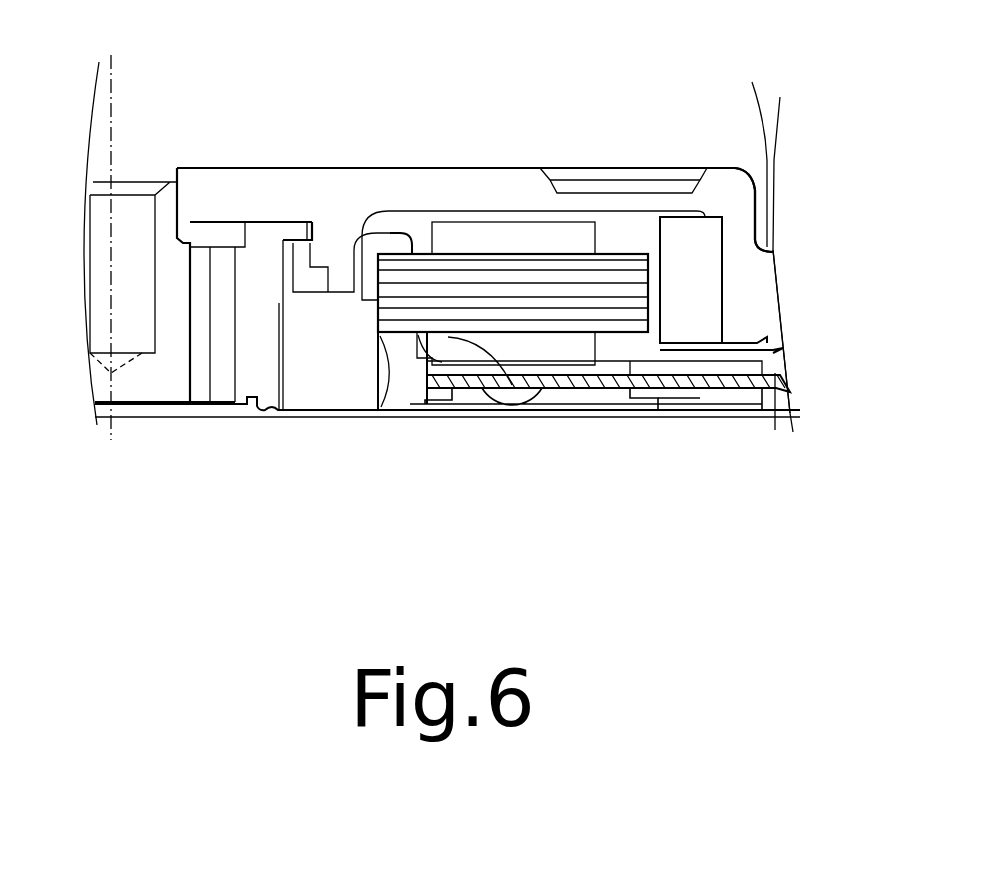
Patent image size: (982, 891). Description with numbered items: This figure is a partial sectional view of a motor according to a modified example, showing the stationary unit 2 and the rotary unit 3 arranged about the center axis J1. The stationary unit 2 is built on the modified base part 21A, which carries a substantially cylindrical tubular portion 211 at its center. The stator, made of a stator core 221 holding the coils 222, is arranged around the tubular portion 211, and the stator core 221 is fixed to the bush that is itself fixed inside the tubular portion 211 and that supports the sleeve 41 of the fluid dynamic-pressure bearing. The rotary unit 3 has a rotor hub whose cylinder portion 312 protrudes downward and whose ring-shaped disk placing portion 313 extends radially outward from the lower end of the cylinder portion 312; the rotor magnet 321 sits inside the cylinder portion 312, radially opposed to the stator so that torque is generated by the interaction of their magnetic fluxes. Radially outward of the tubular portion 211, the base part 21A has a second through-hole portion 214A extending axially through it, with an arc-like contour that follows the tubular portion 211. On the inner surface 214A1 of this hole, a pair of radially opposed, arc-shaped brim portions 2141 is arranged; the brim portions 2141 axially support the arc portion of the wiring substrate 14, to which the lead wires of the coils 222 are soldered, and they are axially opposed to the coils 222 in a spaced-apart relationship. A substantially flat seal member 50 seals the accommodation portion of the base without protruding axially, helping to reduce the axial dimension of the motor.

The center axis J1 is at (122, 238).
The sleeve 41 is at (295, 322).
The rotary unit 3 is at (620, 208).
The coils 222 is at (473, 232).
The stator core 221 is at (507, 262).
The cylinder portion 312 is at (753, 197).
The disk placing portion 313 is at (760, 153).
The rotor magnet 321 is at (697, 291).
The base part 21A is at (747, 367).
The tubular portion 211 is at (398, 378).
The brim portion 2141 is at (445, 388).
The second through-hole portion 214A is at (463, 402).
The seal member 50 is at (604, 410).
The inner surface 214A1 is at (660, 398).
The wiring substrate 14 is at (790, 425).
The stationary unit 2 is at (726, 541).